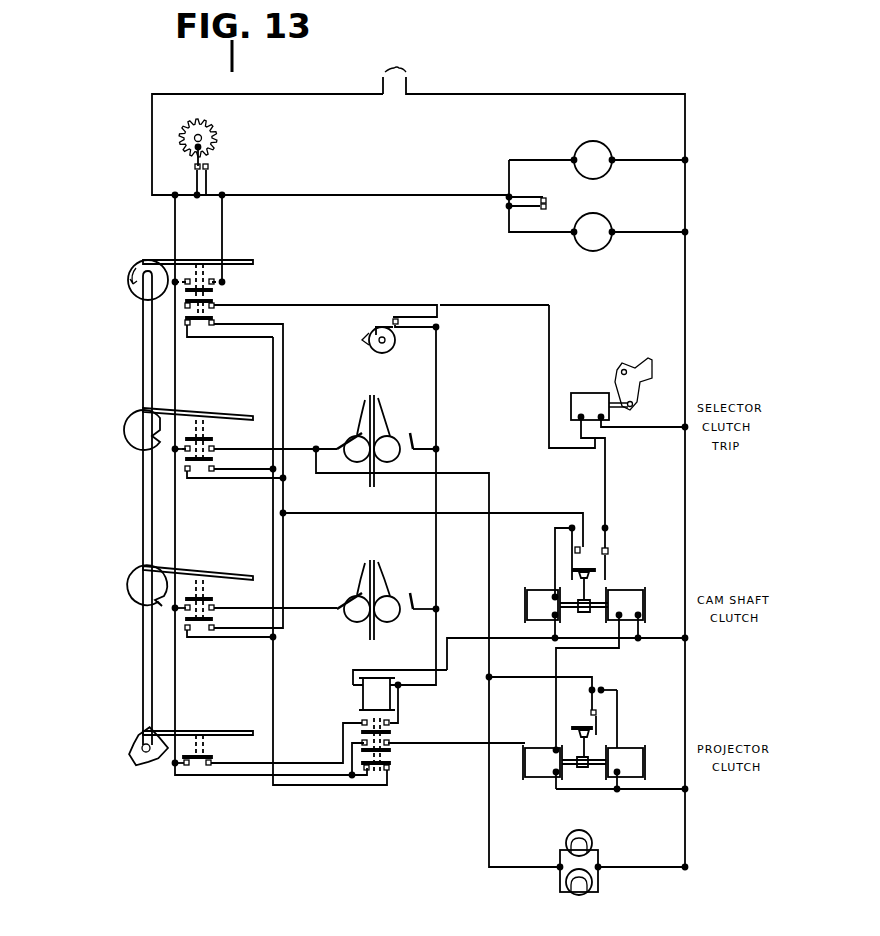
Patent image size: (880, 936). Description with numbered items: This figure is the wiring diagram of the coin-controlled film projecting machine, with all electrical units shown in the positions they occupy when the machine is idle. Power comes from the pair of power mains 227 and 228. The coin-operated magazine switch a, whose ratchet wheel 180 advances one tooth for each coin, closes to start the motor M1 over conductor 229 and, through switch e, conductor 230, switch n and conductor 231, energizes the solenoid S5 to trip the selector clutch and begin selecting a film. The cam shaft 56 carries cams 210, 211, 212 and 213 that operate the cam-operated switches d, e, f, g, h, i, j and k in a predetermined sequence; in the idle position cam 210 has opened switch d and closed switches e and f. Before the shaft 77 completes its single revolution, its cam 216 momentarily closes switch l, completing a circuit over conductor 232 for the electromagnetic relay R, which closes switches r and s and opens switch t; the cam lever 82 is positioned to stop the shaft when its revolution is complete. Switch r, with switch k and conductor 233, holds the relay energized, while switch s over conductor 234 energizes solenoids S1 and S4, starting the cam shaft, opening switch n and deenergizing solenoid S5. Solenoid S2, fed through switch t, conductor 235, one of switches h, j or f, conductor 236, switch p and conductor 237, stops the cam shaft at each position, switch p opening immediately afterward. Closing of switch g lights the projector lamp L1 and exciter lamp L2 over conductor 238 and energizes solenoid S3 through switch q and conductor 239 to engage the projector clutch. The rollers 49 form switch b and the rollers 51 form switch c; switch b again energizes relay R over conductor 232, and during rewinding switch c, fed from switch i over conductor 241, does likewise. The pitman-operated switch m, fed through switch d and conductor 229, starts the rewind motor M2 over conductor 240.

The ratchet wheel 180 is at (208, 130).
The magazine switch a is at (208, 182).
The power main 227 is at (182, 694).
The power main 228 is at (528, 472).
The conductor 229 is at (223, 240).
The conductor 240 is at (543, 197).
The switch m is at (525, 202).
The motor M1 is at (594, 160).
The rewind motor M2 is at (594, 232).
The cam shaft 56 is at (142, 353).
The cam 210 is at (130, 296).
The cam 211 is at (128, 450).
The cam 212 is at (128, 600).
The cam 213 is at (140, 772).
The switch d is at (216, 292).
The switch e is at (214, 315).
The switch f is at (200, 338).
The switch g is at (210, 442).
The switch h is at (200, 480).
The switch i is at (208, 602).
The switch j is at (203, 640).
The switch k is at (206, 762).
The switch l is at (410, 306).
The conductor 230 is at (404, 368).
The conductor 231 is at (606, 483).
The conductor 232 is at (437, 350).
The conductor 233 is at (286, 738).
The conductor 234 is at (548, 699).
The conductor 235 is at (282, 677).
The conductor 236 is at (398, 469).
The conductor 237 is at (554, 557).
The conductor 238 is at (494, 488).
The conductor 239 is at (618, 720).
The conductor 241 is at (275, 601).
The cam 216 is at (372, 350).
The shaft 77 is at (383, 353).
The rollers 49 is at (370, 425).
The rollers 51 is at (370, 585).
The switch b is at (382, 470).
The switch c is at (365, 625).
The cam lever 82 is at (637, 362).
The solenoid S5 is at (599, 406).
The switch n is at (608, 540).
The switch p is at (578, 542).
The solenoid S1 is at (625, 609).
The solenoid S2 is at (542, 609).
The solenoid S3 is at (625, 763).
The solenoid S4 is at (564, 758).
The switch q is at (600, 704).
The electromagnetic relay R is at (400, 690).
The switch r is at (390, 736).
The switch s is at (392, 757).
The switch t is at (388, 770).
The projector lamp L1 is at (592, 837).
The exciter lamp L2 is at (592, 885).